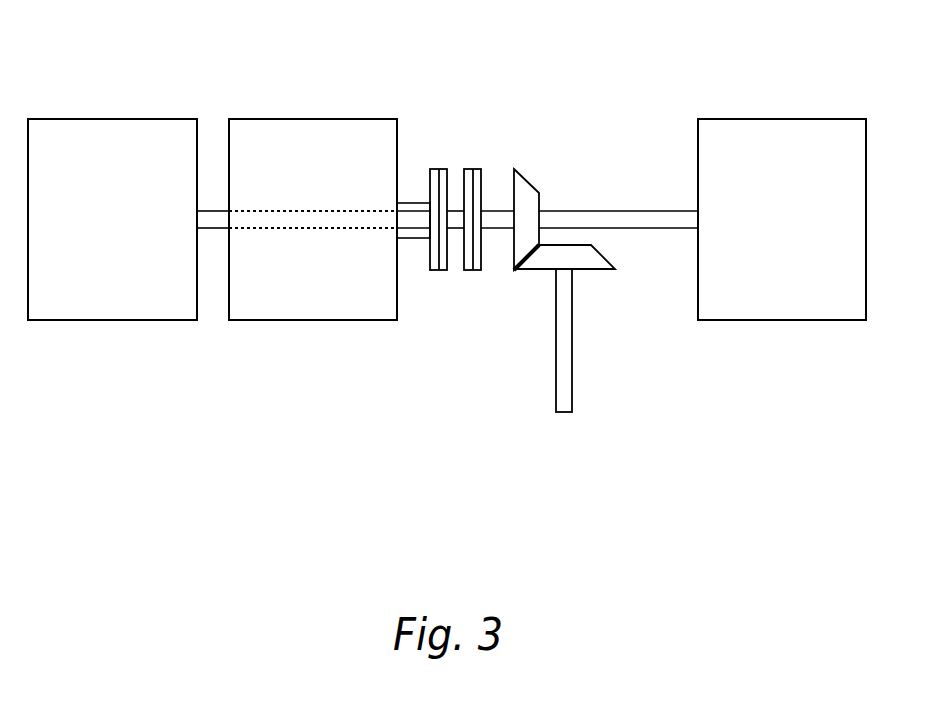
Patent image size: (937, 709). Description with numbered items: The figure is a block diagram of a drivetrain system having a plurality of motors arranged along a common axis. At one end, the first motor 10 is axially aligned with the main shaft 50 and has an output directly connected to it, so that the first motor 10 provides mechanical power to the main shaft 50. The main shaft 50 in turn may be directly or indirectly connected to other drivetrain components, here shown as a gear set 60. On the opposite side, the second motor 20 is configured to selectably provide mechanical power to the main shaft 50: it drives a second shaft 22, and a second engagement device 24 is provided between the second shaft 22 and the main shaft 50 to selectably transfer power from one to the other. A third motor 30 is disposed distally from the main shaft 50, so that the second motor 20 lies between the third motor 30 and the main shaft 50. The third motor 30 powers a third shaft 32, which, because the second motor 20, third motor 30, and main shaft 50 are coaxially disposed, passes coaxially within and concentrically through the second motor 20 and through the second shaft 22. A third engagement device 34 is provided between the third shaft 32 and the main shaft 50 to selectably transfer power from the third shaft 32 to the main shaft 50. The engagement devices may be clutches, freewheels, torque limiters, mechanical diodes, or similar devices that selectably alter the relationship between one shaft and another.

The first motor 10 is at (780, 119).
The second motor 20 is at (312, 119).
The third motor 30 is at (110, 119).
The second shaft 22 is at (413, 203).
The second engagement device 24 is at (432, 169).
The third engagement device 34 is at (477, 169).
The third shaft 32 is at (312, 229).
The main shaft 50 is at (617, 211).
The gear set 60 is at (531, 270).